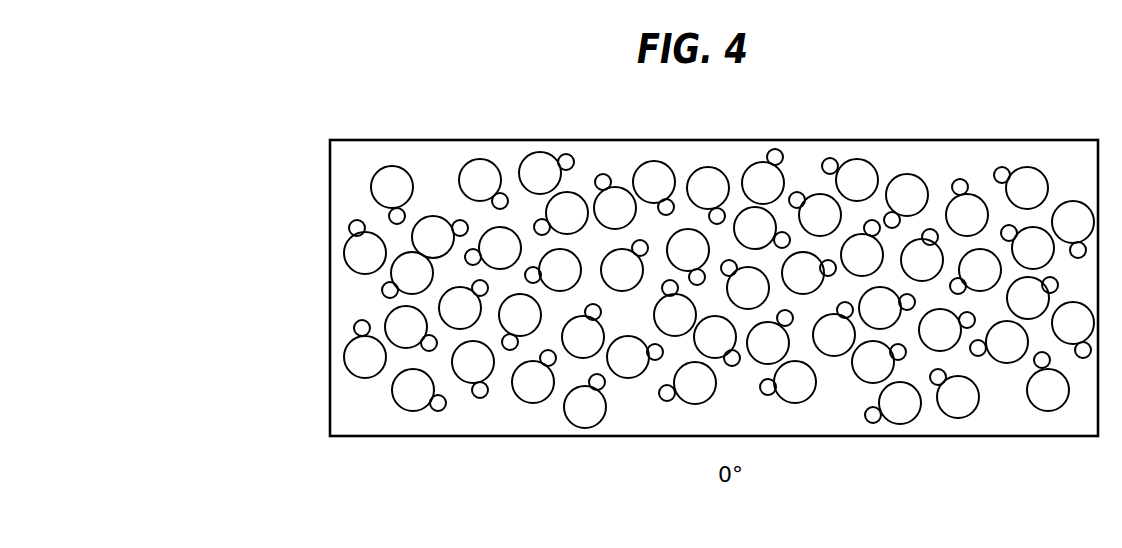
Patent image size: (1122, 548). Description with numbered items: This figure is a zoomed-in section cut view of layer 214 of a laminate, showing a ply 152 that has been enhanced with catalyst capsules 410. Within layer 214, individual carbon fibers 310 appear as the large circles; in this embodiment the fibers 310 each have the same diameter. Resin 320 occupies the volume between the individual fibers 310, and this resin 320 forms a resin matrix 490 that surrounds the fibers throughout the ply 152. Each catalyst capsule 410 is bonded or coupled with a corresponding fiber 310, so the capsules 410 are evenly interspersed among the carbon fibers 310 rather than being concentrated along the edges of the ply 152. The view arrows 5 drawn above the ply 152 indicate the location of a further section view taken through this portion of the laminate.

The section view of FIG. 5 is at (585, 122).
The ply 152 is at (717, 140).
The layer 214 is at (162, 130).
The fibers 310 is at (348, 277).
The resin 320 is at (436, 158).
The catalyst capsules 410 is at (350, 226).
The resin matrix 490 is at (1102, 458).